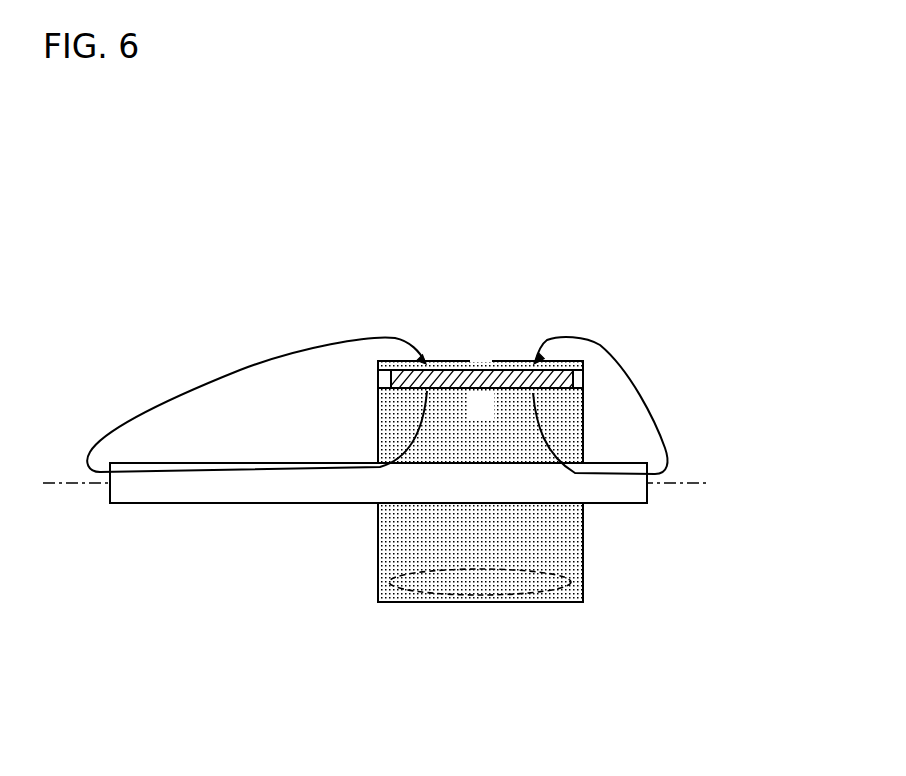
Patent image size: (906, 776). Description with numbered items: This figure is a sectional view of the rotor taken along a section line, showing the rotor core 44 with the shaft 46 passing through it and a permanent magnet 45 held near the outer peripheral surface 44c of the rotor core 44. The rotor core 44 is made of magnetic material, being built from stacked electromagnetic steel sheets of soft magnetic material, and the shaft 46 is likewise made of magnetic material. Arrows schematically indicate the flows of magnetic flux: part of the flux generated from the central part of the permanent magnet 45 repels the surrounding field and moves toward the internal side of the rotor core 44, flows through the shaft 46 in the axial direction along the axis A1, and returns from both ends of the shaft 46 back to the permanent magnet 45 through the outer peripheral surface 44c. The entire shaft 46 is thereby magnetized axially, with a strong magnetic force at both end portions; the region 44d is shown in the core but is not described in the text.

The rotor core 44 is at (428, 603).
The outer peripheral surface 44c is at (515, 362).
The groove 44d is at (547, 603).
The permanent magnet 45 is at (442, 362).
The shaft 46 is at (233, 493).
The rotation axis A1 is at (700, 485).